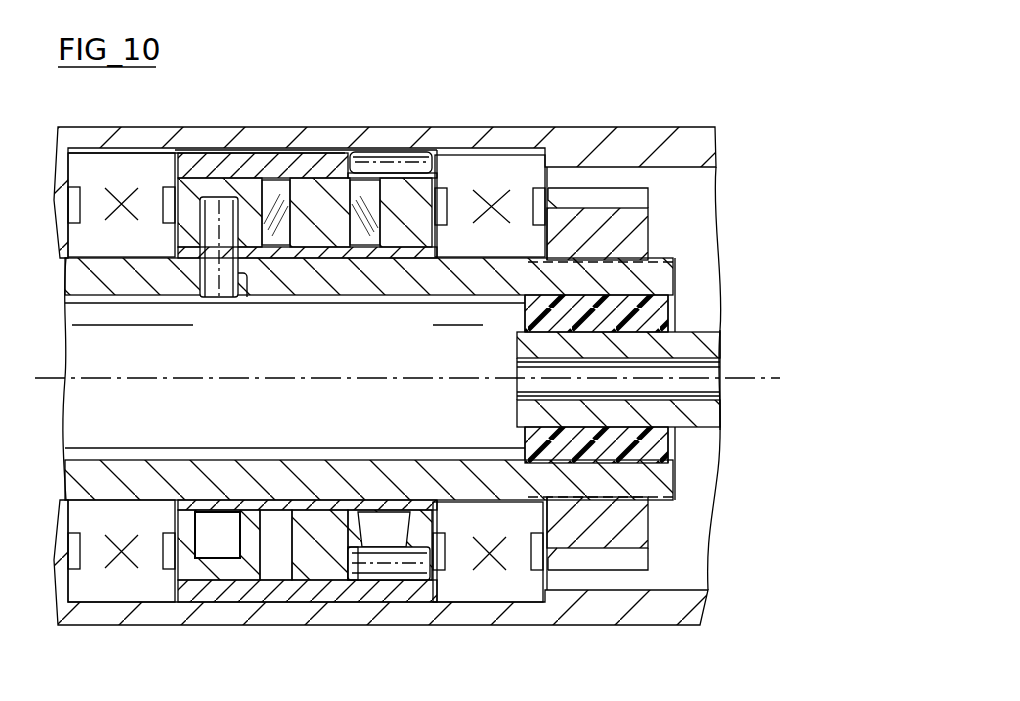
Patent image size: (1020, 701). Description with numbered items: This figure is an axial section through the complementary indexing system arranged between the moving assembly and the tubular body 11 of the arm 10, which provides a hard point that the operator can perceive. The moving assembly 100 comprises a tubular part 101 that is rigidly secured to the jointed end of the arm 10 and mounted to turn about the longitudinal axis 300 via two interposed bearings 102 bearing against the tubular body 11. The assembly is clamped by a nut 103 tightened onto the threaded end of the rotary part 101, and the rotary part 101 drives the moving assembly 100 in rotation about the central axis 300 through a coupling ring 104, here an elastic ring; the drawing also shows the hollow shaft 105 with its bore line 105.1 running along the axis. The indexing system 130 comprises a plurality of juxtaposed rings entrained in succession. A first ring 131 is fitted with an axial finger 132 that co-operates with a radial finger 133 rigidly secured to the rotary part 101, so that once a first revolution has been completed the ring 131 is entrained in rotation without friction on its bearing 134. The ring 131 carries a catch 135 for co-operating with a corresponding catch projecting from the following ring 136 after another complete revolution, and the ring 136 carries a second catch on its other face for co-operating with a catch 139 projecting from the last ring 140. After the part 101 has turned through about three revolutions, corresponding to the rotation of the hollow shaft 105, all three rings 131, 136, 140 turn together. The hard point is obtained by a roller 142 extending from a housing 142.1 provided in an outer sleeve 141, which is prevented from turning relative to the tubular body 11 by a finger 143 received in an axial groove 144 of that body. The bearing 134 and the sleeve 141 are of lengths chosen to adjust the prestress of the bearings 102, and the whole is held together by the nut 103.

The arm 10 is at (522, 120).
The tubular body 11 is at (652, 150).
The moving assembly 100 is at (682, 264).
The tubular part 101 is at (658, 485).
The bearings 102 is at (122, 588).
The nut 103 is at (640, 222).
The coupling ring 104 is at (653, 312).
The hollow shaft 105 is at (700, 347).
The inner shaft bore line 105.1 is at (700, 393).
The indexing system 130 is at (314, 148).
The first ring 131 is at (210, 188).
The axial finger 132 is at (182, 225).
The radial finger 133 is at (228, 275).
The bearing 134 is at (215, 505).
The catch 135 is at (275, 190).
The following ring 136 is at (320, 195).
The catch 139 is at (362, 235).
The last ring 140 is at (403, 230).
The outer sleeve 141 is at (237, 180).
The roller 142 is at (385, 560).
The housing 142.1 is at (347, 580).
The finger 143 is at (412, 155).
The axial groove 144 is at (289, 150).
The longitudinal axis 300 is at (45, 378).